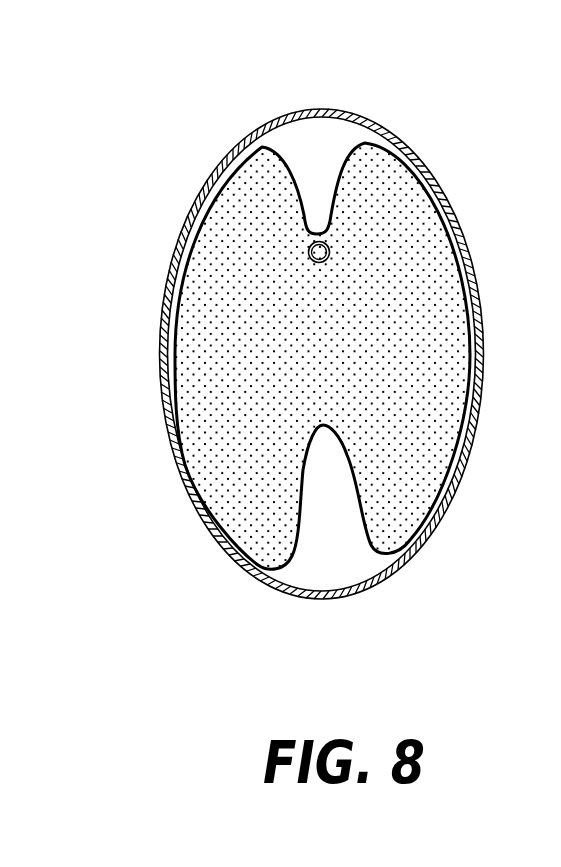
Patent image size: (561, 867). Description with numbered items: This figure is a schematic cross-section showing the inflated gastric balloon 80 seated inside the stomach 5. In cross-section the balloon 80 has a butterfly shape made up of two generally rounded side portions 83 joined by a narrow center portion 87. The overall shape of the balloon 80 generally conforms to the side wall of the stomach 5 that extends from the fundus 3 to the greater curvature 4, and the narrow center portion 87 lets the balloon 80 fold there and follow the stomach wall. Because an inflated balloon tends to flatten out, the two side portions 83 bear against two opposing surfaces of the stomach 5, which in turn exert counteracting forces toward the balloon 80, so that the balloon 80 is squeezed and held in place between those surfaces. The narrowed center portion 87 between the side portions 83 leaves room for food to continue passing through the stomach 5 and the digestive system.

The fundus 3 is at (322, 108).
The greater curvature 4 is at (483, 348).
The balloon 80 is at (402, 270).
The side portions 83 is at (208, 423).
The center portion 87 is at (320, 348).
The stomach 5 is at (324, 524).